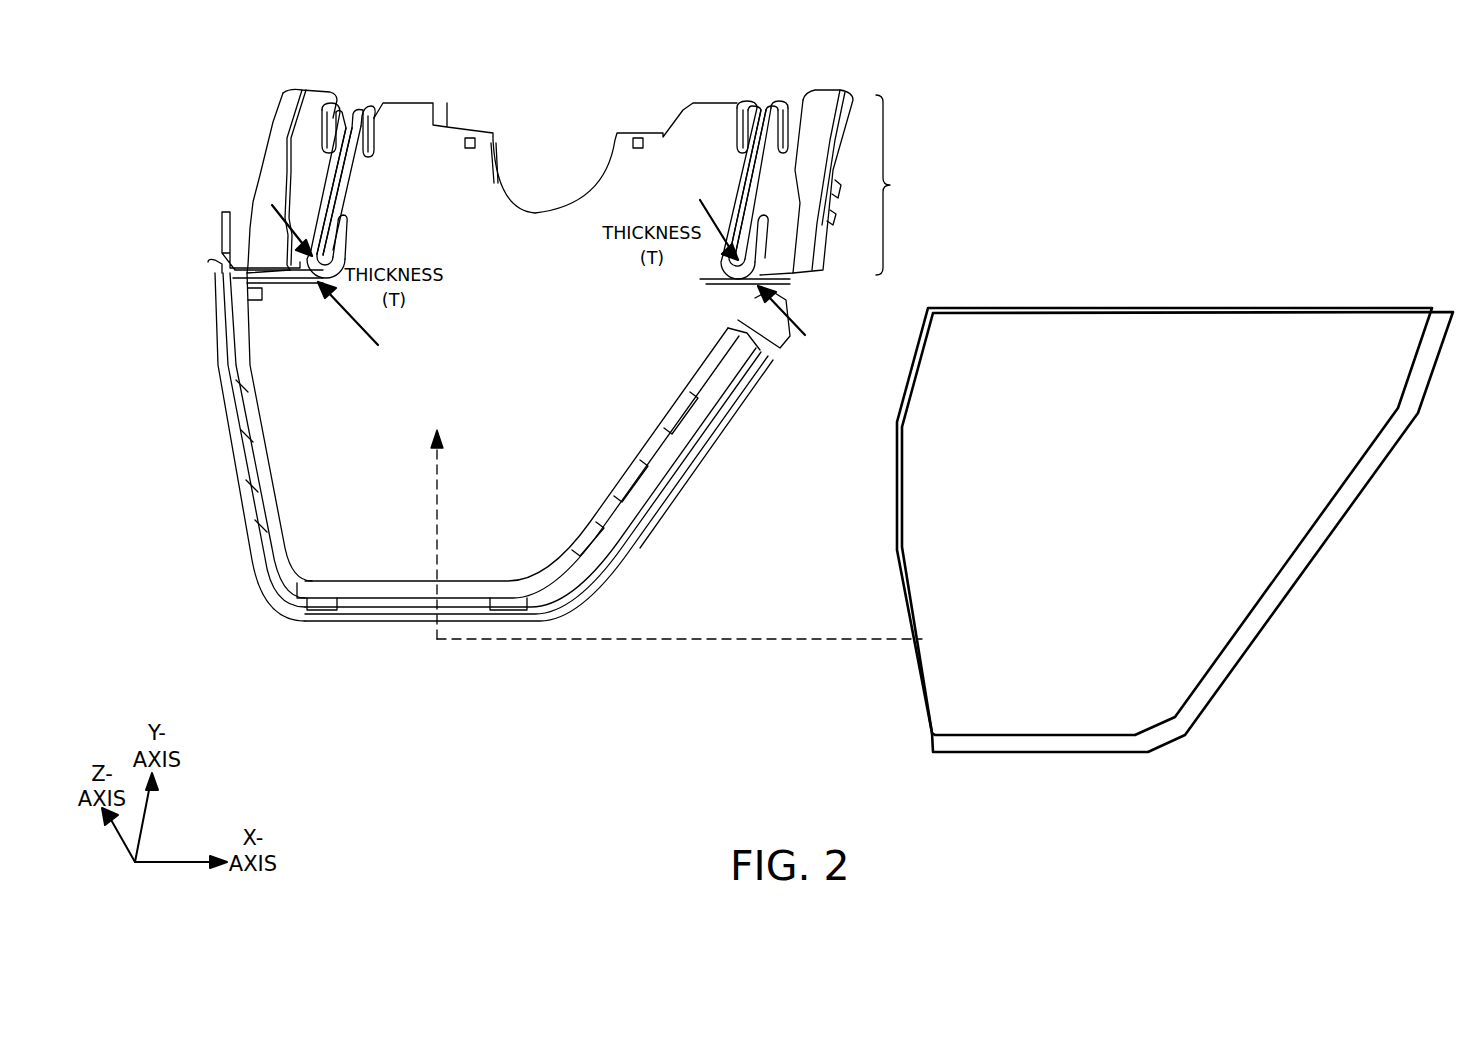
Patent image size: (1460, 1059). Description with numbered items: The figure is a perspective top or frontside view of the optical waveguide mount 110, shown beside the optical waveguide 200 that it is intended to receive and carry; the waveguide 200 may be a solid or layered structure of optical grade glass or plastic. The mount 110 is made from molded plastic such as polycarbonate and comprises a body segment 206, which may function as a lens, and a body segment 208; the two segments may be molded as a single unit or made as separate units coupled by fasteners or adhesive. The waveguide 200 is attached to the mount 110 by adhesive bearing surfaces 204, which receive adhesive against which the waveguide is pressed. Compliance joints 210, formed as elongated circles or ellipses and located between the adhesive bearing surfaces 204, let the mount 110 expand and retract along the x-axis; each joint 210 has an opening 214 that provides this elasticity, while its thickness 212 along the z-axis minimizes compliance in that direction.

The optical waveguide mount 110 is at (176, 100).
The optical waveguide 200 is at (1278, 597).
The adhesive bearing surface 204 is at (272, 187).
The body segment 206 is at (209, 607).
The body segment 208 is at (890, 185).
The compliance joint 210 is at (345, 178).
The thickness 212 is at (318, 276).
The opening 214 is at (335, 200).